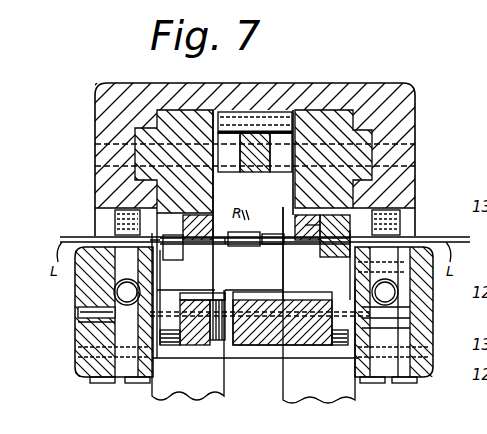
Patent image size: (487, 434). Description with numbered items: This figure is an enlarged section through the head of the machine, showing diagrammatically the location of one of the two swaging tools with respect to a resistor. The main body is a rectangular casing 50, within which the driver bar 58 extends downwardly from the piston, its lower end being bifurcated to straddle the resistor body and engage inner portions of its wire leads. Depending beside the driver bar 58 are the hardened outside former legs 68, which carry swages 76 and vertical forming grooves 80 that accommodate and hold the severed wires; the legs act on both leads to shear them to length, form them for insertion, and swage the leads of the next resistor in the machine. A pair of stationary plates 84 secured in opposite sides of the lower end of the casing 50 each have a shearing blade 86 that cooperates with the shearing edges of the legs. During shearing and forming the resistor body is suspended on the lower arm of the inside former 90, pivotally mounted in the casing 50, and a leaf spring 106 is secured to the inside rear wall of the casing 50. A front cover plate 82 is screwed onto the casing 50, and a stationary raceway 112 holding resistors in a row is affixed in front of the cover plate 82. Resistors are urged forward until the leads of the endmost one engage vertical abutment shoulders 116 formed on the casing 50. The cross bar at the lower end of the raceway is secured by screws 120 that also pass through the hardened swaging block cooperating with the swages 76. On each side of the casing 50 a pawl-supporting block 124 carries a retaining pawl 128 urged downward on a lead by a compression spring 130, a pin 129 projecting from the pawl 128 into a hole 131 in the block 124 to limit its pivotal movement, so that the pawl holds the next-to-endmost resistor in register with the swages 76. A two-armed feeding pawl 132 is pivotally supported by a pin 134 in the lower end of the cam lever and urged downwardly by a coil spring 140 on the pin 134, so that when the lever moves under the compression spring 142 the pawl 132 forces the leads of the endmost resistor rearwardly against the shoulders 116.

The casing 50 is at (417, 178).
The stationary plates 84 is at (207, 86).
The leaf spring 106 is at (290, 122).
The inside former 90 is at (230, 182).
The driver bar 58 is at (284, 200).
The outside former legs 68 is at (185, 226).
The abutment shoulders 116 is at (100, 238).
The forming grooves 80 is at (185, 242).
The shearing blade 86 is at (318, 228).
The swages 76 is at (240, 262).
The coil spring 140 is at (216, 342).
The pin 134 is at (300, 330).
The feeding pawl 132 is at (166, 348).
The raceway 112 is at (283, 398).
The pawl-supporting block 124 is at (120, 293).
The compression spring 130 is at (90, 313).
The pin 129 is at (88, 335).
The hole 131 is at (425, 314).
The retaining pawl 128 is at (135, 322).
The front cover plate 82 is at (478, 101).
The compression spring 142 is at (476, 133).
The screws 120 is at (477, 259).